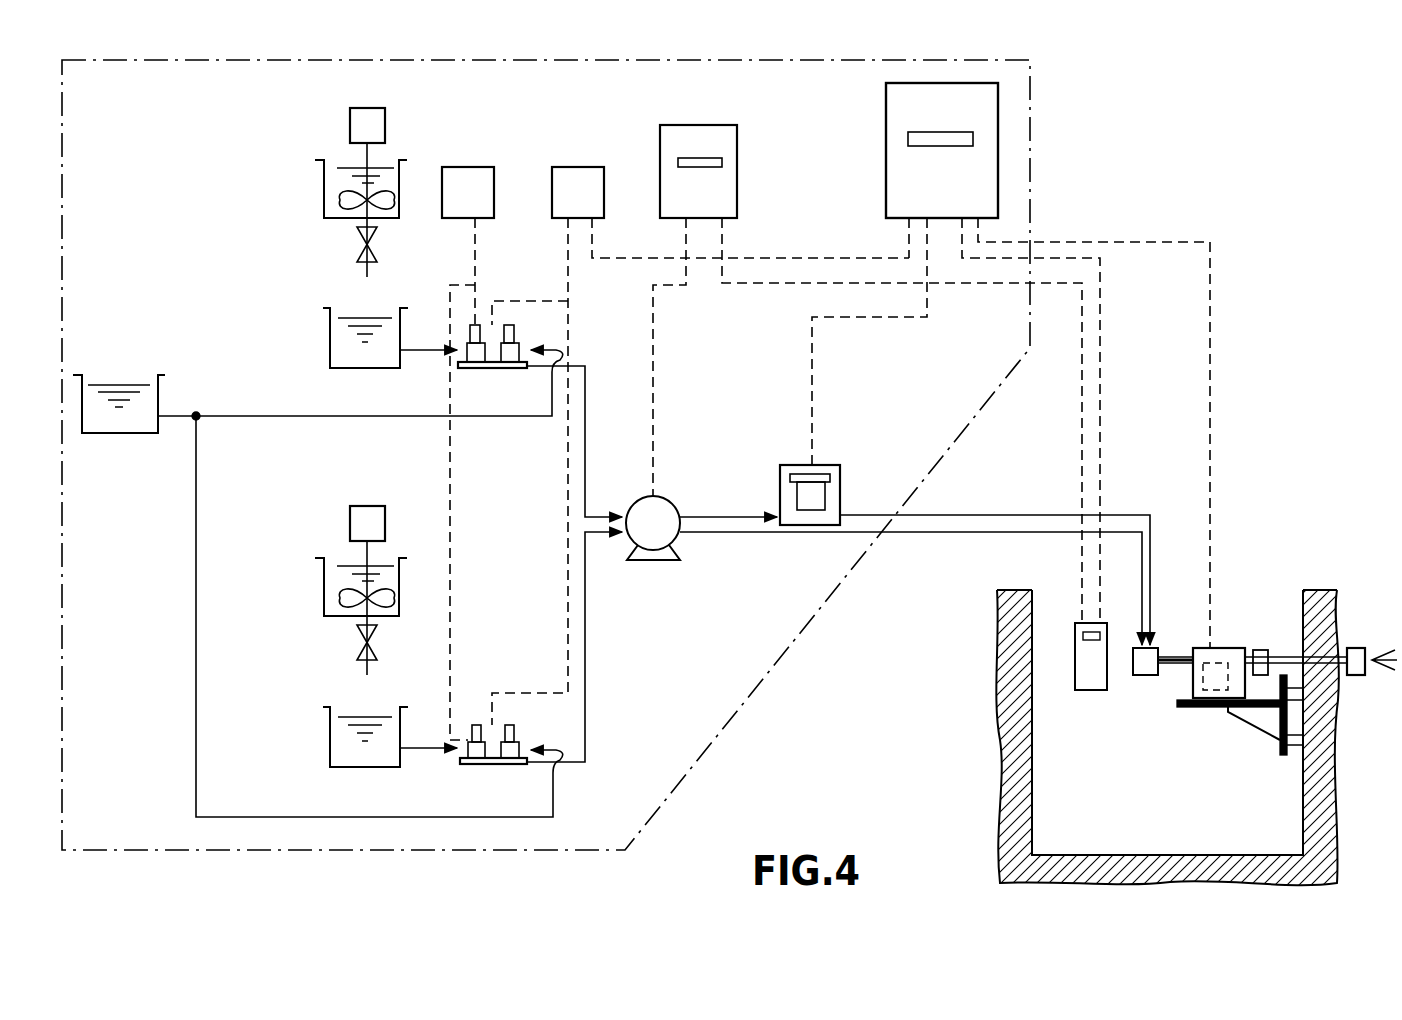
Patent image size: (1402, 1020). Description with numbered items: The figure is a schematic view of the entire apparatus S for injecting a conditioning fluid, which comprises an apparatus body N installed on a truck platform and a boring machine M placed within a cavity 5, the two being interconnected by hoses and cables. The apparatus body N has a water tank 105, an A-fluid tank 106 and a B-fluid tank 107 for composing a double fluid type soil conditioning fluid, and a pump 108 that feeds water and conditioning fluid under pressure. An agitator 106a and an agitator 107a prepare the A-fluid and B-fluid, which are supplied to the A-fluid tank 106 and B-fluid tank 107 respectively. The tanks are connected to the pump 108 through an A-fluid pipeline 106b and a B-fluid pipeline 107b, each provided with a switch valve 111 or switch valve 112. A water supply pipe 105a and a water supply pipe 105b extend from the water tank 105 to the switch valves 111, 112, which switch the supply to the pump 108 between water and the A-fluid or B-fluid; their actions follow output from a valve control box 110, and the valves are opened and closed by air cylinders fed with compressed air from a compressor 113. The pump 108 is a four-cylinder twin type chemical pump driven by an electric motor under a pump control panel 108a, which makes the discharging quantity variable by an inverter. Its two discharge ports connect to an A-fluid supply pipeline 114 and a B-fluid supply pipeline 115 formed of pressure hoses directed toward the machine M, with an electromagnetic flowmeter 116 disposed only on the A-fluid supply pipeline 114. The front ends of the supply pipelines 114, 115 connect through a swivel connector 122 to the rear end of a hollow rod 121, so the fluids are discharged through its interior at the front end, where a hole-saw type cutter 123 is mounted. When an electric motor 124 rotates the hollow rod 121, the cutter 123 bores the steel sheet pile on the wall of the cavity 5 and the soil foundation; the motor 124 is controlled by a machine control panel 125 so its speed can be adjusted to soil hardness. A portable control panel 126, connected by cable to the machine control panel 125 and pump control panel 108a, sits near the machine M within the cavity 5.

The cavity 5 is at (1085, 853).
The water tank 105 is at (124, 375).
The water supply pipe 105a is at (318, 420).
The water supply pipe 105b is at (345, 820).
The A-fluid tank 106 is at (323, 340).
The agitator 106a is at (333, 154).
The A-fluid pipeline 106b is at (578, 362).
The B-fluid tank 107 is at (323, 733).
The agitator 107a is at (323, 588).
The B-fluid pipeline 107b is at (588, 625).
The pump 108 is at (664, 512).
The pump control panel 108a is at (738, 134).
The valve control box 110 is at (580, 168).
The switch valve 111 is at (493, 370).
The switch valve 112 is at (490, 768).
The compressor 113 is at (485, 168).
The A-fluid supply pipeline 114 is at (1005, 514).
The B-fluid supply pipeline 115 is at (952, 545).
The flowmeter 116 is at (842, 488).
The hollow rod 121 is at (1181, 648).
The swivel connector 122 is at (1140, 676).
The hole-saw type cutter 123 is at (1355, 645).
The electric motor 124 is at (1205, 700).
The machine control panel 125 is at (885, 171).
The control panel 126 is at (1078, 690).
The apparatus body N is at (1032, 148).
The apparatus for injecting a conditioning fluid S is at (1130, 206).
The boring machine M is at (1193, 764).